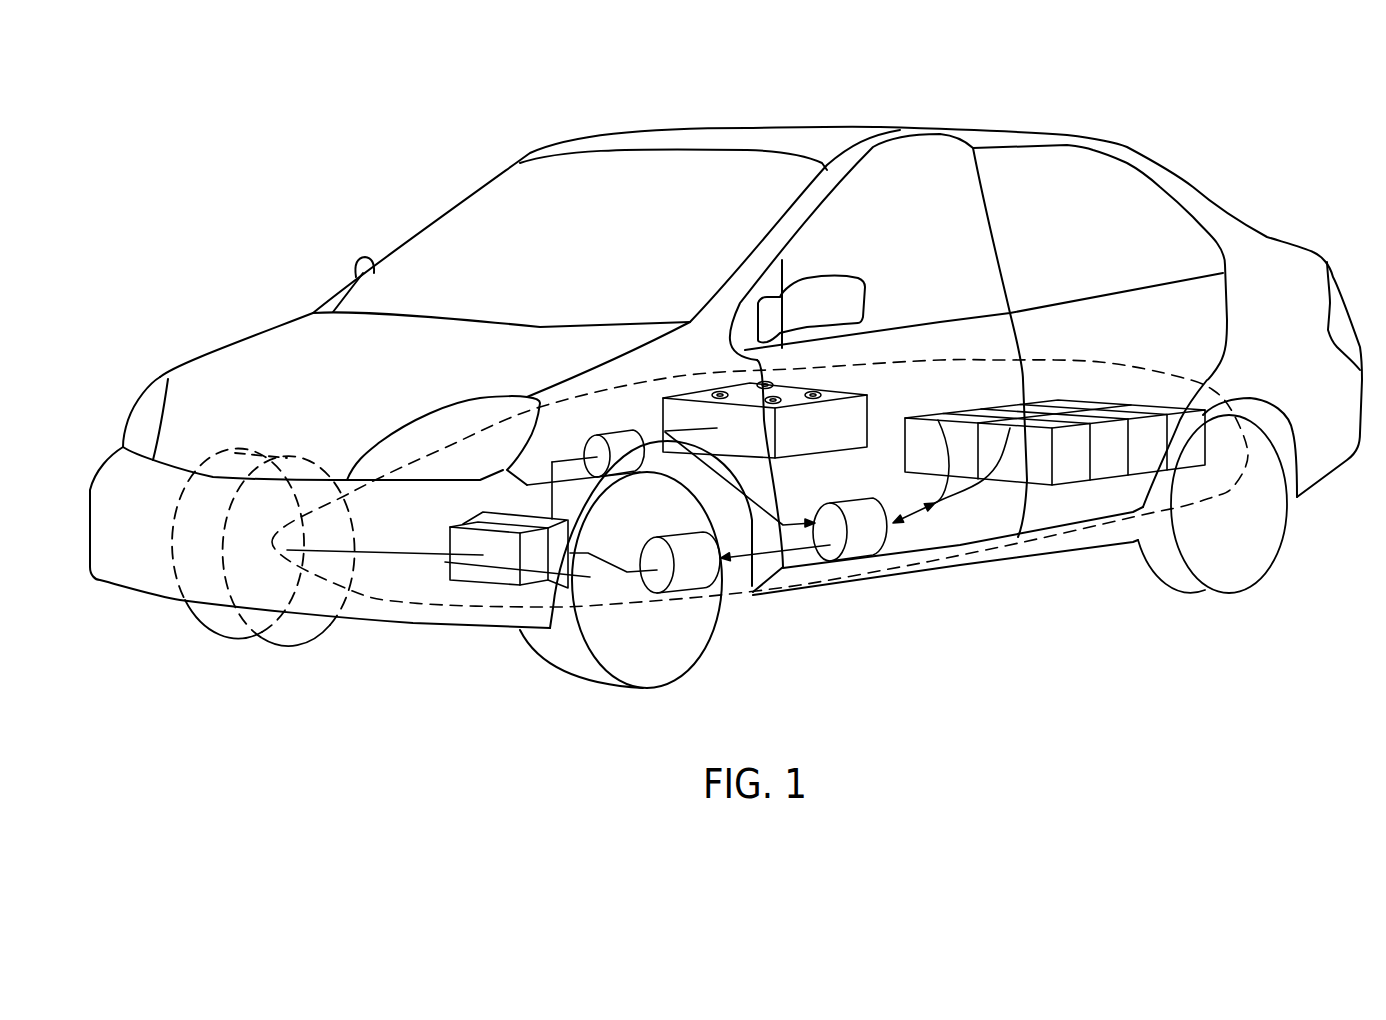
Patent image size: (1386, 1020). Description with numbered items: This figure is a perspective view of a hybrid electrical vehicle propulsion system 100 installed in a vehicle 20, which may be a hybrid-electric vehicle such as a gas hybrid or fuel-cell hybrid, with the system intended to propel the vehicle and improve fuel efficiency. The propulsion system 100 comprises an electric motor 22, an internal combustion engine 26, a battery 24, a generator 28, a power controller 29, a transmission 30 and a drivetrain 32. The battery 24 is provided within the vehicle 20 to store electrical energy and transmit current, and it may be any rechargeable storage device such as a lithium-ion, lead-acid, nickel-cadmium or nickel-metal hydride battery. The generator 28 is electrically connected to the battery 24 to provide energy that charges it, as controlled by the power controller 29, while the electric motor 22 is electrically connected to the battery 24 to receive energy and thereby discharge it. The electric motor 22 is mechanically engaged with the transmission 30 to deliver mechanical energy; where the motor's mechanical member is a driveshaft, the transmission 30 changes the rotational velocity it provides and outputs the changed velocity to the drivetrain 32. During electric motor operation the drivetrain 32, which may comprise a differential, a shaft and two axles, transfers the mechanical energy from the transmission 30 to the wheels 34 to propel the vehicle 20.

The vehicle 20 is at (1236, 146).
The electric motor 22 is at (702, 582).
The battery 24 is at (1095, 398).
The internal combustion engine 26 is at (867, 416).
The generator 28 is at (613, 428).
The power controller 29 is at (862, 548).
The transmission 30 is at (450, 533).
The drivetrain 32 is at (428, 573).
The wheels 34 is at (704, 682).
The hybrid electrical vehicle propulsion system 100 is at (950, 362).